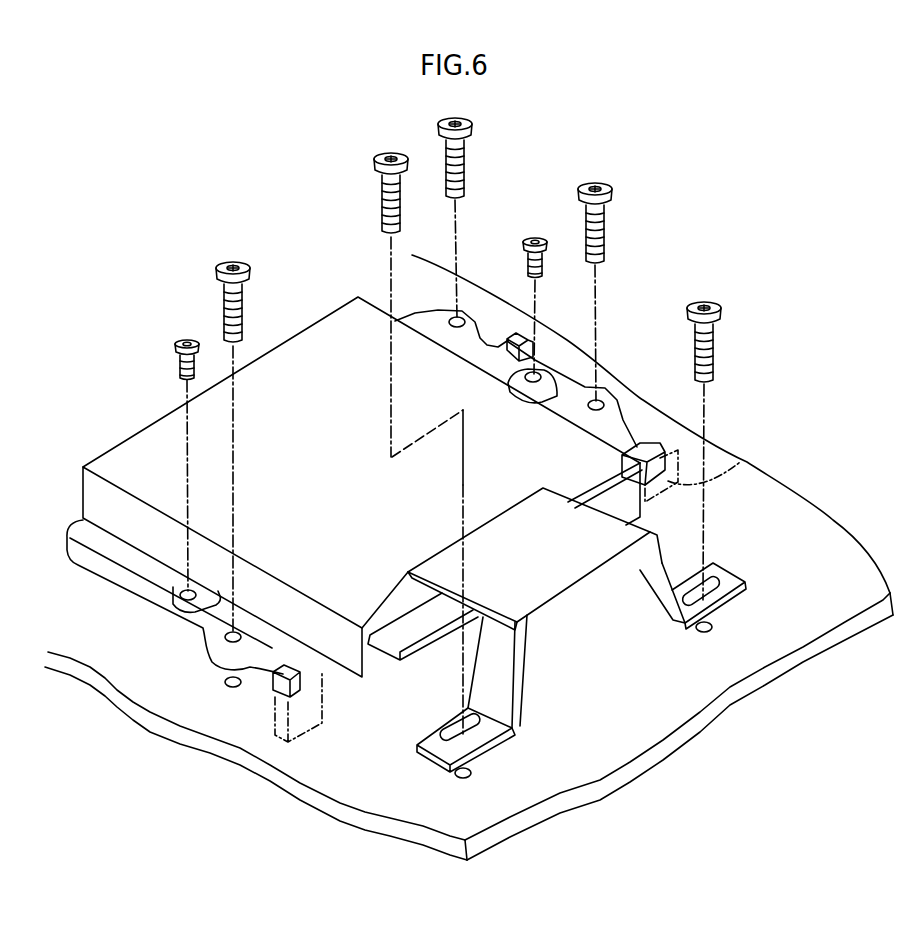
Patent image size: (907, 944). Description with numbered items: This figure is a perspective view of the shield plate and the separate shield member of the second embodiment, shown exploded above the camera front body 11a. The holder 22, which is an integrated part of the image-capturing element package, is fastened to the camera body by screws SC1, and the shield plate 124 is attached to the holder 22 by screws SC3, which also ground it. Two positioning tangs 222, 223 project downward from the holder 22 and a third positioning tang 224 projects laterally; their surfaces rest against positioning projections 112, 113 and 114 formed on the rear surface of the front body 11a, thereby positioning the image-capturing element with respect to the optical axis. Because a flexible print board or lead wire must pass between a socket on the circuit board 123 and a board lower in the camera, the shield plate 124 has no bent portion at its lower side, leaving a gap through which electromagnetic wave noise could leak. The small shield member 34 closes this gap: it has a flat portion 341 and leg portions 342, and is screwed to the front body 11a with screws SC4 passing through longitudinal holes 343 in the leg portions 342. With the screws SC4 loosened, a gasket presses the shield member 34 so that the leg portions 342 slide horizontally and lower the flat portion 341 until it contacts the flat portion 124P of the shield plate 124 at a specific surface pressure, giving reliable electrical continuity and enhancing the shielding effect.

The camera front body 11a is at (150, 727).
The positioning projection 112 is at (317, 718).
The positioning projection 113 is at (740, 463).
The positioning projection 114 is at (560, 329).
The holder 22 is at (78, 537).
The positioning tang 222 is at (260, 690).
The positioning tang 223 is at (640, 443).
The positioning tang 224 is at (507, 342).
The shield plate 124 is at (362, 498).
The flat portion of the shield plate 124P is at (385, 510).
The circuit board 123 is at (400, 660).
The shield member 34 is at (645, 661).
The flat portion 341 is at (533, 527).
The leg portions 342 is at (663, 600).
The longitudinal holes 343 is at (707, 580).
The screws SC1 is at (466, 140).
The screws SC3 is at (543, 236).
The screws SC4 is at (383, 195).